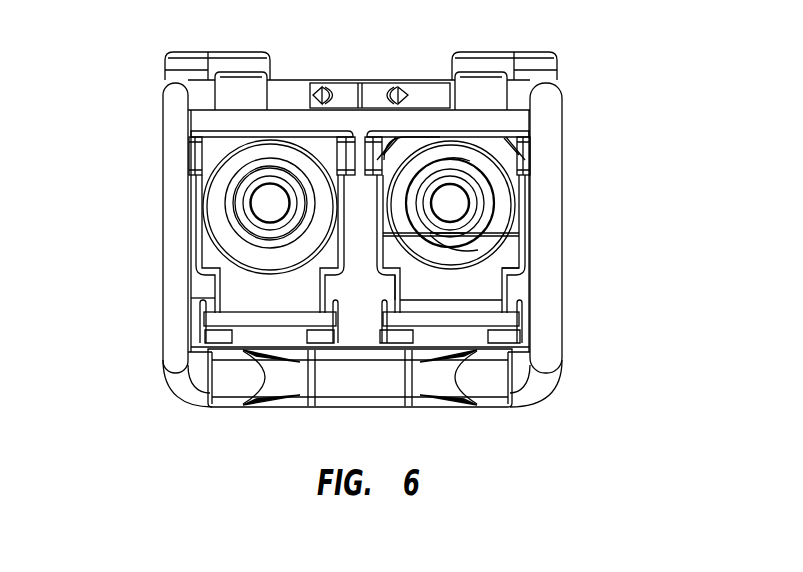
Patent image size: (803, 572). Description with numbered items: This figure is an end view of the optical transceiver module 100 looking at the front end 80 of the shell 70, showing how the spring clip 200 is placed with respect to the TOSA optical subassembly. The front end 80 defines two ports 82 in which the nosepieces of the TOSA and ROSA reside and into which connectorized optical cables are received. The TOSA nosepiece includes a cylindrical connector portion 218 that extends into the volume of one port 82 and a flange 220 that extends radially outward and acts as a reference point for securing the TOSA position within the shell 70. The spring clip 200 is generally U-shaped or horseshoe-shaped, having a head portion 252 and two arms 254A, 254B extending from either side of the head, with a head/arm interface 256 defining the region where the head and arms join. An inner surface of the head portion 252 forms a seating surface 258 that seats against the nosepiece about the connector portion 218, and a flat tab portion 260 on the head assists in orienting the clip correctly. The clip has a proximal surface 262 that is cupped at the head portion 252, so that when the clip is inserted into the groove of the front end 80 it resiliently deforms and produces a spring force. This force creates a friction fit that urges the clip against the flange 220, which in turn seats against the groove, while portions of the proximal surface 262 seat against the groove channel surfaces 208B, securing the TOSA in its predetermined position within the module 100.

The optical transceiver module 100 is at (128, 94).
The spring clip 200 is at (497, 137).
The shell 70 is at (530, 194).
The front end 80 is at (358, 282).
The ports 82 is at (245, 288).
The surfaces of the groove bottom and side channels 208B is at (393, 212).
The connector portion 218 is at (467, 303).
The flange 220 is at (478, 250).
The head portion 252 is at (417, 157).
The first arm 254A is at (400, 263).
The second arm 254B is at (508, 264).
The head/arm interface 256 is at (447, 233).
The seating surface 258 is at (483, 176).
The tab portion 260 is at (387, 125).
The proximal surface 262 is at (455, 155).